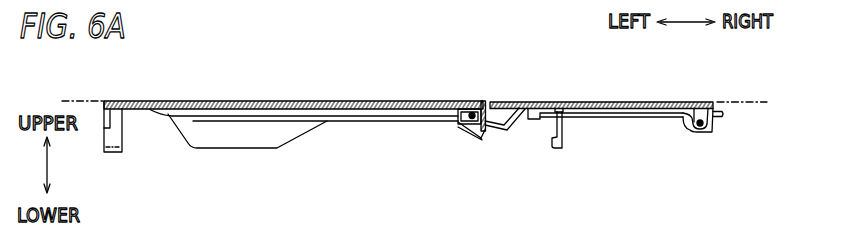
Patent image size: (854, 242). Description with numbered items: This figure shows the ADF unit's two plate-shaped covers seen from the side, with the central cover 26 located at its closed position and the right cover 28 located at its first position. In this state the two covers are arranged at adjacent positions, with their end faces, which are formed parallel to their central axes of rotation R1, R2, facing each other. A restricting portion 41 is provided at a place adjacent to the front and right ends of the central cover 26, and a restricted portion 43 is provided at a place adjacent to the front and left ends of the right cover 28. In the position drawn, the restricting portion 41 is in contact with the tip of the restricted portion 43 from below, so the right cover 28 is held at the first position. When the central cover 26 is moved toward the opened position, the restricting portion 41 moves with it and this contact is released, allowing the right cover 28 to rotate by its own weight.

The central cover 26 is at (303, 101).
The right cover 28 is at (588, 102).
The central axis of rotation R1 is at (473, 111).
The central axis of rotation R2 is at (701, 118).
The restricting portion 41 is at (458, 124).
The restricted portion 43 is at (497, 129).